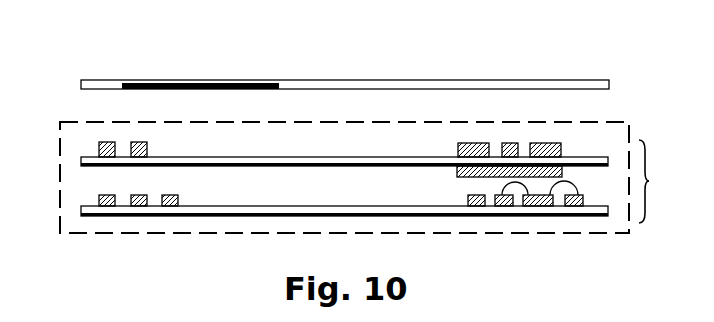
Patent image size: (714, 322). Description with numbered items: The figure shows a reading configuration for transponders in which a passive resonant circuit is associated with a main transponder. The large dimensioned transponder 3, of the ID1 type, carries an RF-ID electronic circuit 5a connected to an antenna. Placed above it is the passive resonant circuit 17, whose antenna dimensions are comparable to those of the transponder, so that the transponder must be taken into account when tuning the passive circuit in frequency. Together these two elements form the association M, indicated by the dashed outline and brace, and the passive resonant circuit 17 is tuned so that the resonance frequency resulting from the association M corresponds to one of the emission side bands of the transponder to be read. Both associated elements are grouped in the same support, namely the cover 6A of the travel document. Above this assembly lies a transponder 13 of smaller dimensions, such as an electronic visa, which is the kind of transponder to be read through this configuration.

The transponder of smaller dimensions 13 is at (215, 82).
The passive resonant circuit 17 is at (85, 163).
The large dimensioned transponder 3 is at (98, 200).
The electronic circuit 5a is at (540, 208).
The cover 6A is at (433, 234).
The association M is at (674, 192).